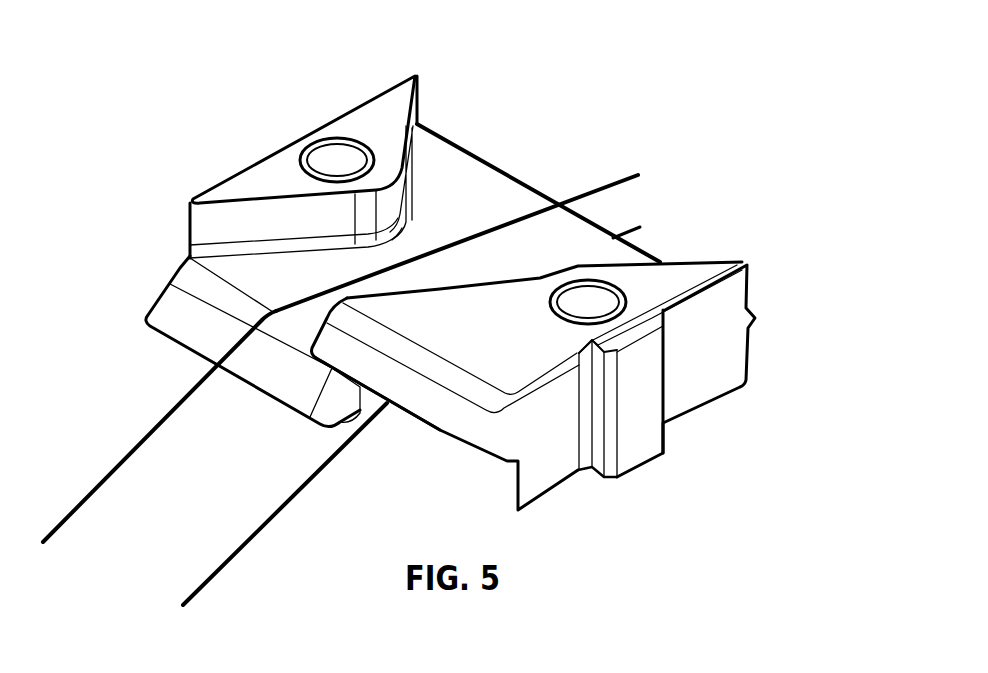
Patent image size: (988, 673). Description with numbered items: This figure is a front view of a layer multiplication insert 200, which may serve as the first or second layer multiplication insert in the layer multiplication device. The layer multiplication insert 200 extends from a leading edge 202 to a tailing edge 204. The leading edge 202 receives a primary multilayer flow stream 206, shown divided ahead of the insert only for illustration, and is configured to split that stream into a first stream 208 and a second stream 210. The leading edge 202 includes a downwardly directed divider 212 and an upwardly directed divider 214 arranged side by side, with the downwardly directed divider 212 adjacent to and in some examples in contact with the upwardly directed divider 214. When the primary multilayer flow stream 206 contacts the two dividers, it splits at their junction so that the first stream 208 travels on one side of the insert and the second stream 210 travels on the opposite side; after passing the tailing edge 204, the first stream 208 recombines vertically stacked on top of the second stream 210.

The layer multiplication insert 200 is at (834, 72).
The leading edge 202 is at (118, 342).
The tailing edge 204 is at (516, 162).
The primary multilayer flow stream 206 is at (183, 633).
The first stream 208 is at (638, 175).
The second stream 210 is at (660, 222).
The downwardly directed divider 212 is at (193, 355).
The upwardly directed divider 214 is at (447, 437).